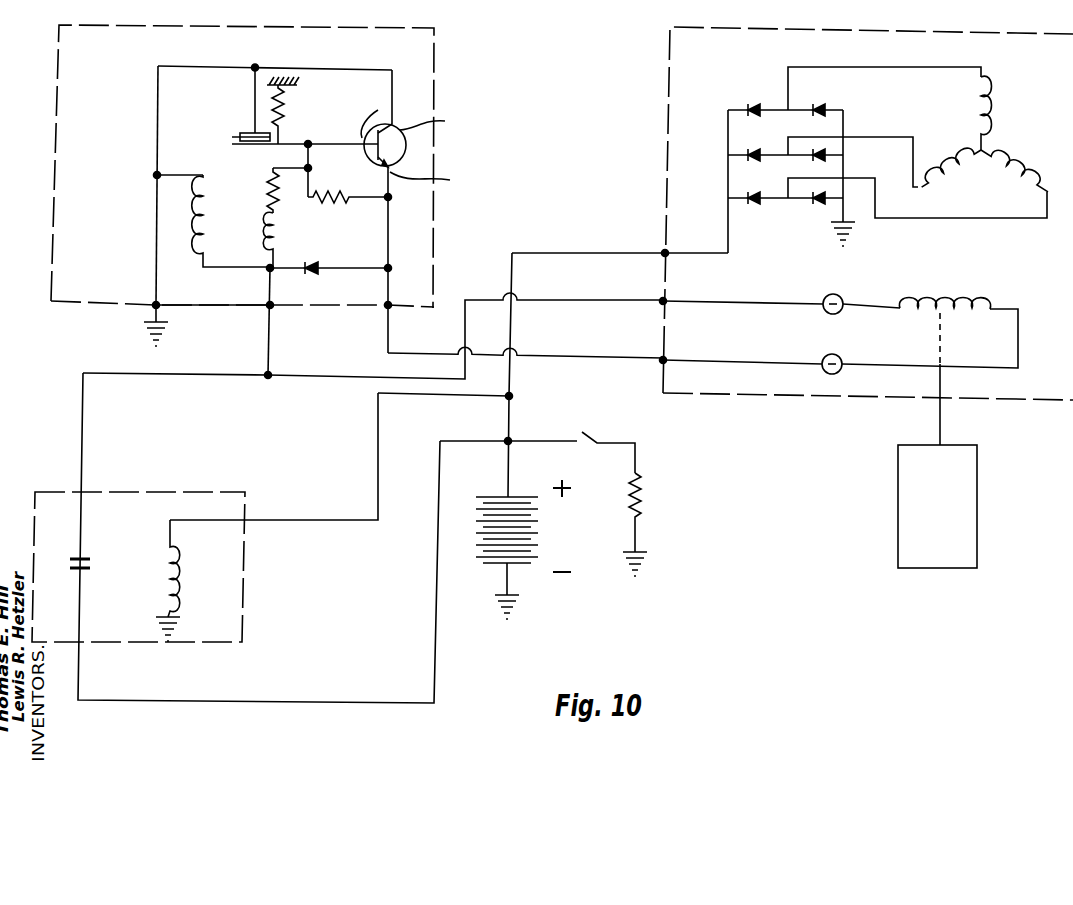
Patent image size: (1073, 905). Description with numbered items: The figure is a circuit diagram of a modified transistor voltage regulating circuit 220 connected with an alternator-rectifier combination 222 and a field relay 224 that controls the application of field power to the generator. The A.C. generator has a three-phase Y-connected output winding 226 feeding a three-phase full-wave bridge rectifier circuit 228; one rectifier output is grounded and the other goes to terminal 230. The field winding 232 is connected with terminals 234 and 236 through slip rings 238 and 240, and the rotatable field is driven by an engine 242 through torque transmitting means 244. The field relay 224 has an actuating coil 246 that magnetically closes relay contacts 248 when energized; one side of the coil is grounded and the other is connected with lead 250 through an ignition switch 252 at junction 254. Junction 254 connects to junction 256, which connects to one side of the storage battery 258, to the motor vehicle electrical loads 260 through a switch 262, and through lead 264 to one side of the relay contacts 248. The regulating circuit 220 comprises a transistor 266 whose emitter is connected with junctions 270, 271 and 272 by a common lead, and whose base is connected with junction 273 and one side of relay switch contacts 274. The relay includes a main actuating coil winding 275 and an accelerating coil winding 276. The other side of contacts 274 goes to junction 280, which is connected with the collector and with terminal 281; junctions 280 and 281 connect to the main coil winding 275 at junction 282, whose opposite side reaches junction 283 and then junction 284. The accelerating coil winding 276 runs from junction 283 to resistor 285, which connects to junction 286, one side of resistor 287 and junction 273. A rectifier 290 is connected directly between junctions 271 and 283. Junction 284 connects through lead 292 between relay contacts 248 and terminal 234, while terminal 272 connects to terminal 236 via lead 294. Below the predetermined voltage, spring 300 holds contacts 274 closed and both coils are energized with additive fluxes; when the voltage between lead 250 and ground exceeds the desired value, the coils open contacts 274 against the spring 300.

The voltage regulating circuit 220 is at (422, 89).
The alternator-rectifier combination 222 is at (675, 90).
The field relay 224 is at (225, 605).
The three-phase Y-connected output winding 226 is at (981, 149).
The three-phase full-wave bridge rectifier circuit 228 is at (828, 128).
The terminal 230 is at (665, 253).
The field winding 232 is at (961, 292).
The terminal 234 is at (667, 300).
The terminal 236 is at (667, 358).
The slip ring 238 is at (835, 297).
The slip ring 240 is at (837, 355).
The engine 242 is at (946, 495).
The torque transmitting means 244 is at (942, 383).
The actuating coil 246 is at (191, 572).
The relay contacts 248 is at (81, 566).
The lead 250 is at (538, 253).
The ignition switch 252 is at (370, 480).
The junction 254 is at (510, 396).
The junction 256 is at (508, 441).
The storage battery 258 is at (532, 533).
The motor vehicle electrical loads 260 is at (642, 488).
The switch 262 is at (583, 433).
The lead 264 is at (435, 666).
The transistor 266 is at (398, 150).
The junction 270 is at (388, 197).
The junction 271 is at (388, 268).
The junction 272 is at (388, 306).
The junction 273 is at (308, 144).
The relay switch contacts 274 is at (231, 130).
The main actuating coil winding 275 is at (206, 202).
The accelerating coil winding 276 is at (278, 226).
The junction 280 is at (257, 67).
The terminal 281 is at (157, 304).
The junction 282 is at (148, 173).
The junction 283 is at (270, 274).
The junction 284 is at (270, 306).
The resistor 285 is at (276, 198).
The junction 286 is at (308, 168).
The resistor 287 is at (360, 184).
The rectifier 290 is at (316, 265).
The lead 292 is at (137, 374).
The lead 294 is at (590, 358).
The spring 300 is at (280, 103).